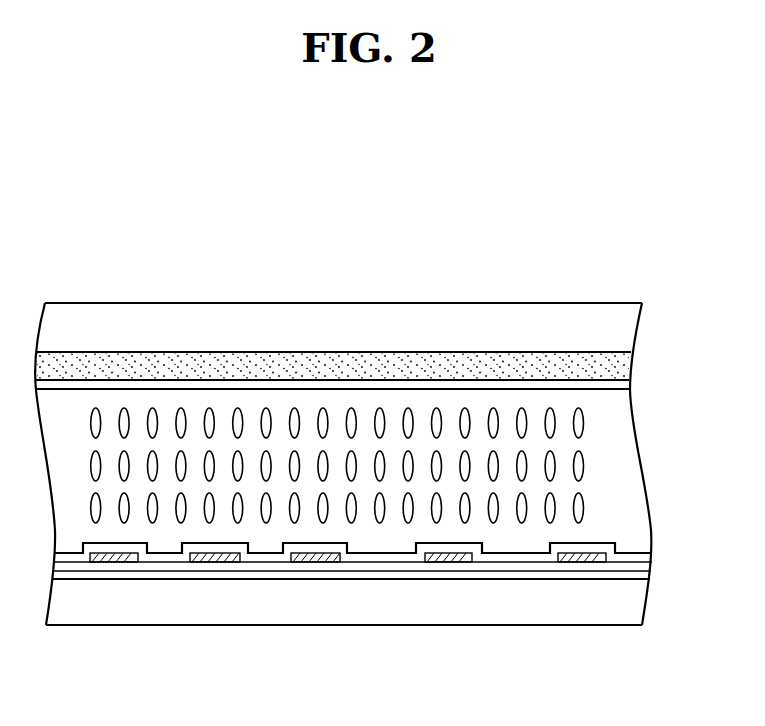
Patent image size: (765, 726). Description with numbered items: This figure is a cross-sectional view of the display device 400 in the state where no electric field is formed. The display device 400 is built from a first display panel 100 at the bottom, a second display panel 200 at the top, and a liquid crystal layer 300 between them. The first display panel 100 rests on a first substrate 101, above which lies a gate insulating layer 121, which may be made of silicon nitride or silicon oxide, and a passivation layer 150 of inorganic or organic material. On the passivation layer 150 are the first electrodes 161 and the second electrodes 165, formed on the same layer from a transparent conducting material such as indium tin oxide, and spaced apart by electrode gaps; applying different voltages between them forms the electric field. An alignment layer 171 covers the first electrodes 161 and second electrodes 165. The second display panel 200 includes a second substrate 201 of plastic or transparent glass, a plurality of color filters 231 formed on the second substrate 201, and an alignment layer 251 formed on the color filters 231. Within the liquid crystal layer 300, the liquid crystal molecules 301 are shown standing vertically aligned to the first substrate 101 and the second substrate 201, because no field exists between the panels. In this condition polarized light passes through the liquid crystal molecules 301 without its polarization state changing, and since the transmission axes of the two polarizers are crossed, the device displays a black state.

The display device 400 is at (593, 258).
The first display panel 100 is at (662, 553).
The first substrate 101 is at (515, 615).
The gate insulating layer 121 is at (385, 577).
The passivation layer 150 is at (270, 567).
The first electrodes 161 is at (213, 563).
The second electrodes 165 is at (112, 563).
The alignment layer 171 is at (168, 555).
The second display panel 200 is at (662, 303).
The second substrate 201 is at (372, 315).
The color filters 231 is at (297, 367).
The alignment layer 251 is at (228, 387).
The liquid crystal layer 300 is at (662, 390).
The liquid crystal molecules 301 is at (584, 504).